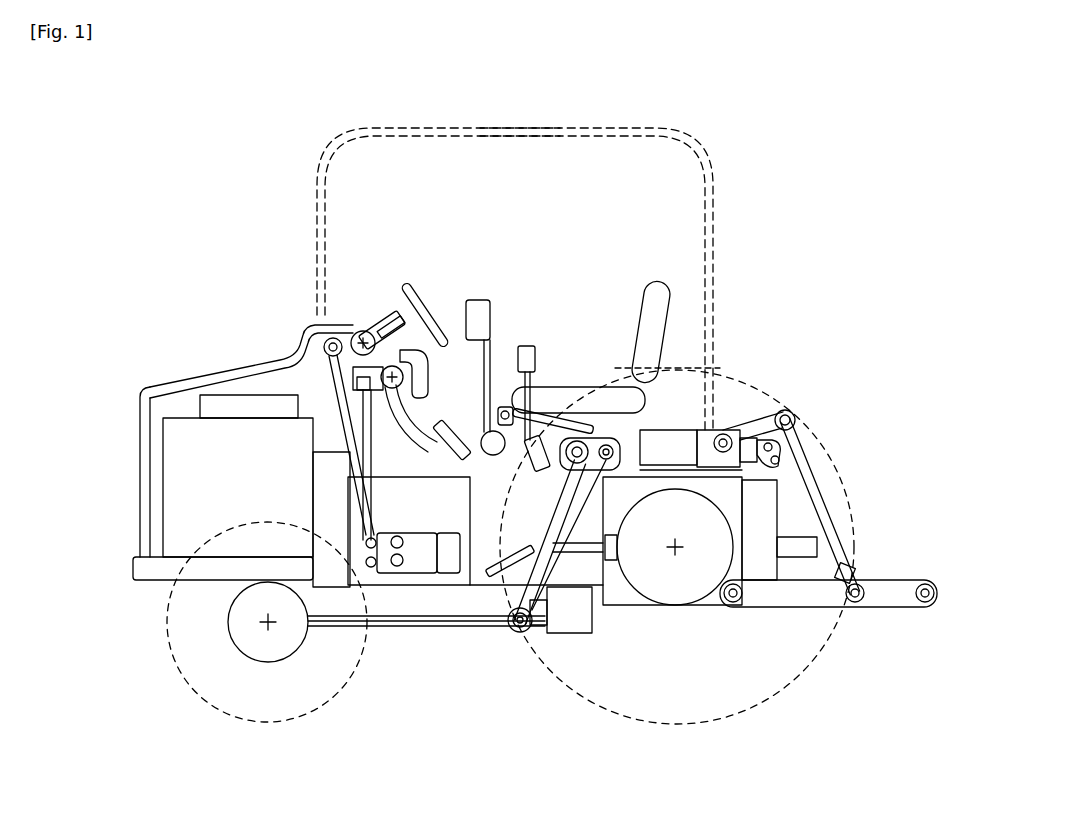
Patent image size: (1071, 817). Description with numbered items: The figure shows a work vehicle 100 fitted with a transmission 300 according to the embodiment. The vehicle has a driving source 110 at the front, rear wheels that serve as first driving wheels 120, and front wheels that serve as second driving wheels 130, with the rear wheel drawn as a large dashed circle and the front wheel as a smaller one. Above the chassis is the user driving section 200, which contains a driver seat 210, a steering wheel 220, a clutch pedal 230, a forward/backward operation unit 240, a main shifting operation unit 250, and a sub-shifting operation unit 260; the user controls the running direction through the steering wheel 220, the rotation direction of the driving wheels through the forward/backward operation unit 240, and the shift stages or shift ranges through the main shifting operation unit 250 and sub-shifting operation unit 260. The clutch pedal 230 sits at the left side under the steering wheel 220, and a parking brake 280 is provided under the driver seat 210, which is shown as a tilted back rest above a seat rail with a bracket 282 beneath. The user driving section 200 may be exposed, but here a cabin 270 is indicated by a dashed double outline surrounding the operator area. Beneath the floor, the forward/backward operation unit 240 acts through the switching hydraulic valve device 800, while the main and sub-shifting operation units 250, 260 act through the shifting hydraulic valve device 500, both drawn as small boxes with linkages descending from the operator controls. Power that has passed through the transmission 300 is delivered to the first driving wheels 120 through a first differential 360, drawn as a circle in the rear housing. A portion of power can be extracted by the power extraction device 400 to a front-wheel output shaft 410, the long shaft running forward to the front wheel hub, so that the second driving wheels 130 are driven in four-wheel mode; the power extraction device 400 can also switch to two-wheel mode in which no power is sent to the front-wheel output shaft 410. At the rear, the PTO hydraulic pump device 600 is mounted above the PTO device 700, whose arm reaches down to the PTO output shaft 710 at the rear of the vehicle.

The work vehicle 100 is at (230, 178).
The driving source 110 is at (203, 463).
The rear wheels or first driving wheels 120 is at (820, 380).
The front wheels or second driving wheels 130 is at (163, 622).
The user driving section 200 is at (633, 127).
The driver seat 210 is at (657, 280).
The steering wheel 220 is at (403, 282).
The clutch pedal 230 is at (337, 420).
The forward/backward operation unit 240 is at (380, 323).
The main shifting operation unit 250 is at (478, 300).
The sub-shifting operation unit 260 is at (530, 340).
The cabin 270 is at (500, 122).
The parking brake 280 is at (568, 403).
The seat bracket 282 is at (640, 457).
The transmission 300 is at (482, 577).
The first differential 360 is at (697, 593).
The power extraction device 400 is at (568, 637).
The front-wheel output shaft 410 is at (327, 623).
The shifting hydraulic valve device 500 is at (438, 573).
The PTO hydraulic pump device 600 is at (723, 425).
The PTO device 700 is at (765, 510).
The PTO output shaft 710 is at (798, 557).
The switching hydraulic valve device 800 is at (397, 573).